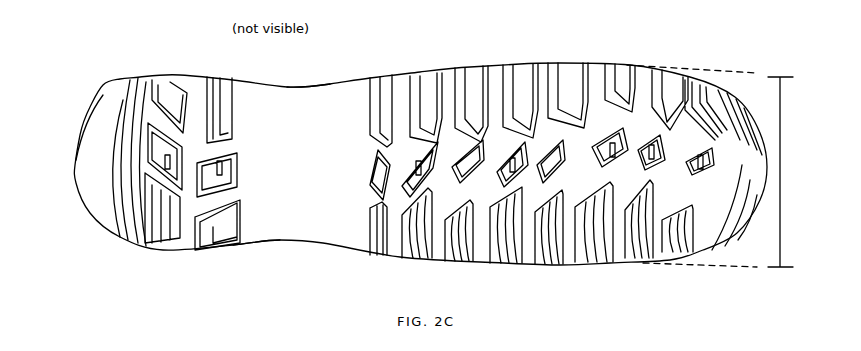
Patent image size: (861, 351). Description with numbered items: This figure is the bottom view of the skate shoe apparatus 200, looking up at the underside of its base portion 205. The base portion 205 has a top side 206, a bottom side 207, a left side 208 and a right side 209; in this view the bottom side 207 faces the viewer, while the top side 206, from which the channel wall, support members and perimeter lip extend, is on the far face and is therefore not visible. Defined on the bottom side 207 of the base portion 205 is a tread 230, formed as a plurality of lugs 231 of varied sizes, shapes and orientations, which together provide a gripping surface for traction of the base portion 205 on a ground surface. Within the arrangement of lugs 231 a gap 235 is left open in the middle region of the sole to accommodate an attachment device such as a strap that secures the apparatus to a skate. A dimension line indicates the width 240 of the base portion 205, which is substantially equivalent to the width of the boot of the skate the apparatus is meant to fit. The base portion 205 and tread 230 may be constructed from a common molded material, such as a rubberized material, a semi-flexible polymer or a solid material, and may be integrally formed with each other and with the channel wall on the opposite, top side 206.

The skate shoe apparatus 200 is at (535, 52).
The base portion 205 is at (67, 170).
The top side 206 is at (326, 72).
The bottom side 207 is at (480, 240).
The left side 208 is at (400, 257).
The right side 209 is at (375, 78).
The tread 230 is at (139, 206).
The lugs 231 is at (172, 90).
The gap 235 is at (297, 150).
The width 240 is at (782, 170).